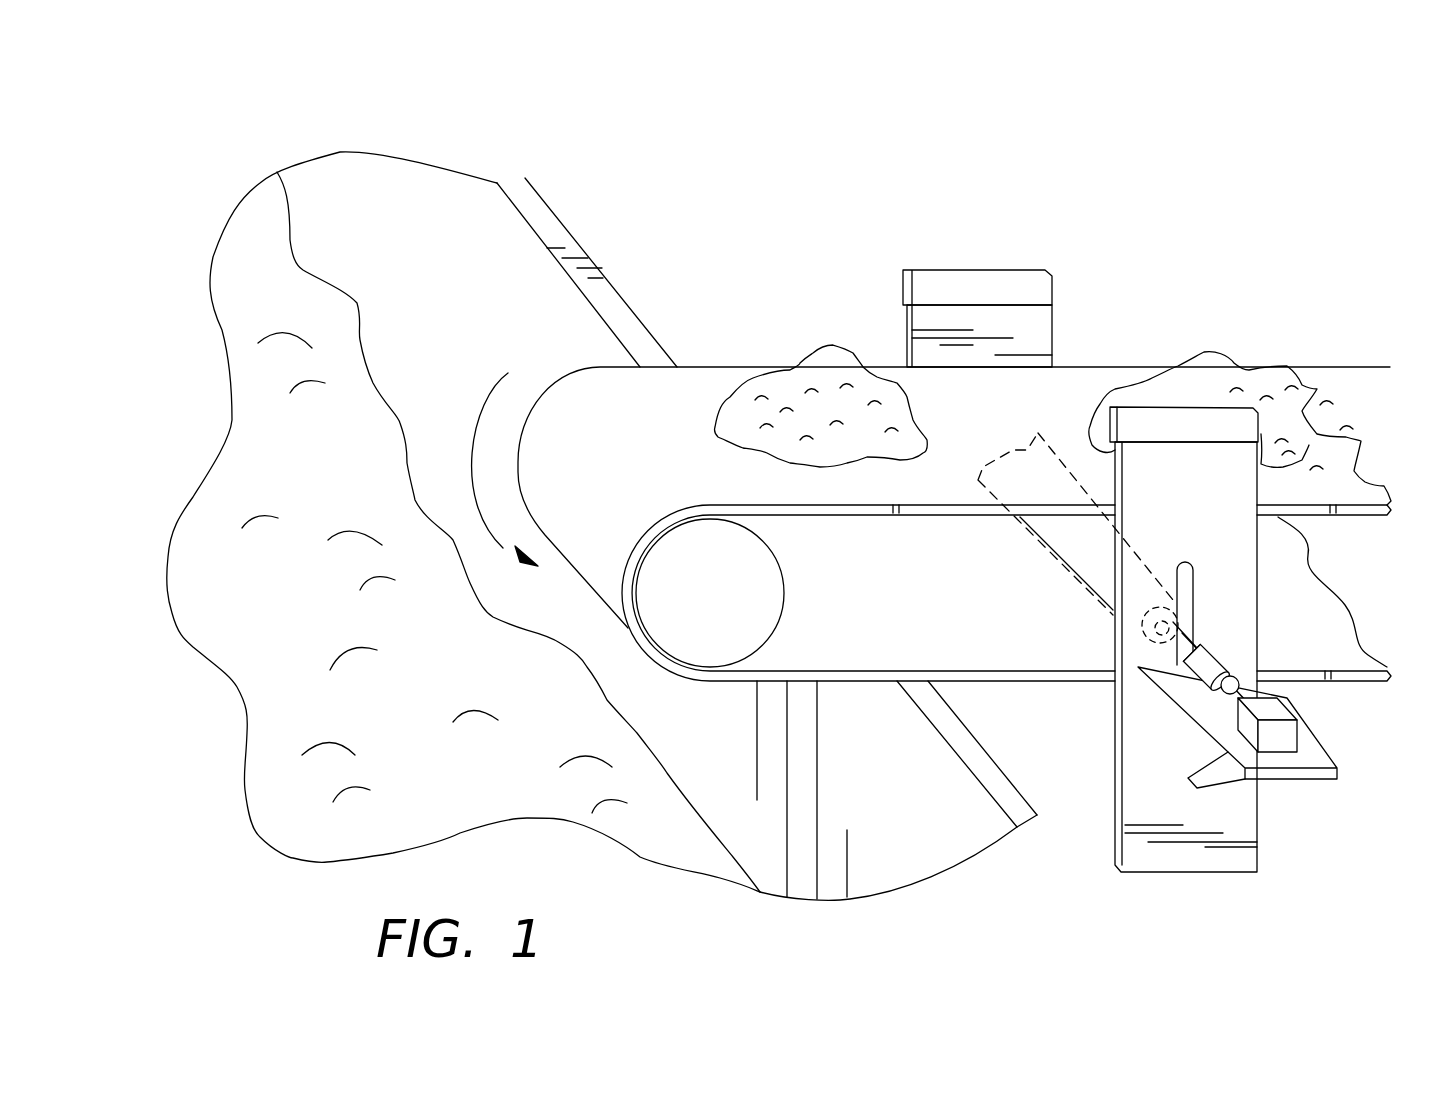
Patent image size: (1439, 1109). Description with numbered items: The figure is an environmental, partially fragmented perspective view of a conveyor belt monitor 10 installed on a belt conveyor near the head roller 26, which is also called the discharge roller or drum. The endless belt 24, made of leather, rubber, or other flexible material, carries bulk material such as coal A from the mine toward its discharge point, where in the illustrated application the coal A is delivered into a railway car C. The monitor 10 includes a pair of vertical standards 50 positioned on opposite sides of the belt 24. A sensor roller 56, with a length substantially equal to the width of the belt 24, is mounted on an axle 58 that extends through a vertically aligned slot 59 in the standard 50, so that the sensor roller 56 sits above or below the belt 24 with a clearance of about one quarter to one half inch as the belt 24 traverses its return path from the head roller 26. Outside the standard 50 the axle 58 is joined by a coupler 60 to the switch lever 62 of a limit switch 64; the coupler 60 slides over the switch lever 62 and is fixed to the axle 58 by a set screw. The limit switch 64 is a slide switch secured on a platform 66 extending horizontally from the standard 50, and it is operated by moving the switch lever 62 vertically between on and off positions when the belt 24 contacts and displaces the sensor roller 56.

The conveyor belt monitor 10 is at (1124, 253).
The belt 24 is at (1083, 381).
The head roller 26 is at (770, 597).
The vertical standards 50 is at (985, 293).
The sensor rollers 56 is at (1093, 545).
The axle 58 is at (1125, 658).
The slots 59 is at (1222, 568).
The coupler 60 is at (1235, 665).
The switch lever 62 is at (1200, 687).
The limit switch 64 is at (1282, 713).
The platform 66 is at (1308, 778).
The coal A is at (408, 708).
The railway car C is at (547, 215).